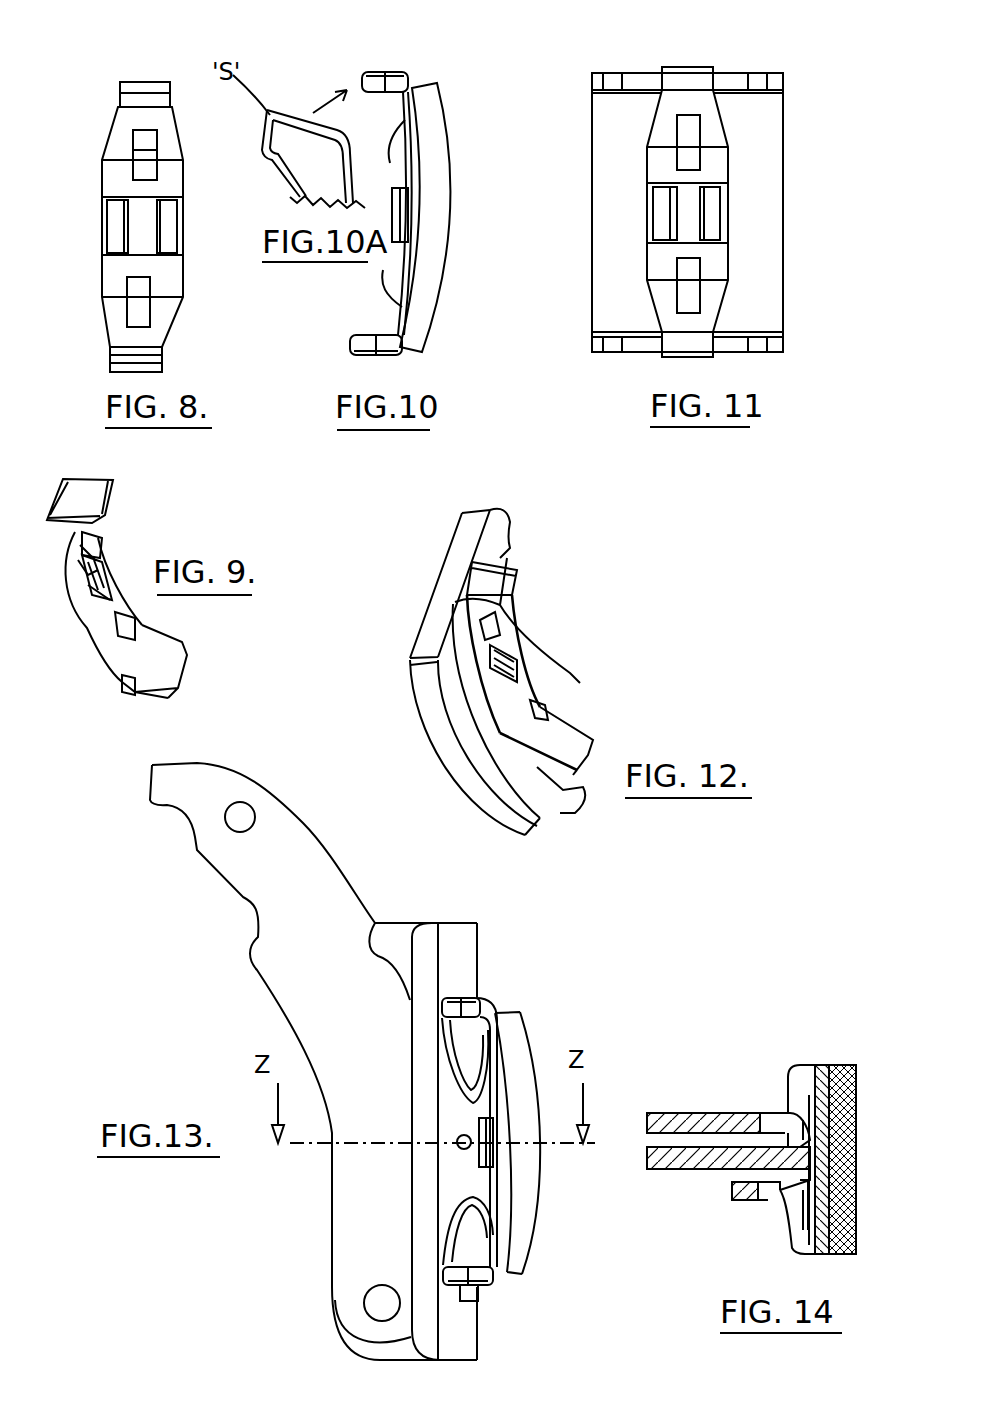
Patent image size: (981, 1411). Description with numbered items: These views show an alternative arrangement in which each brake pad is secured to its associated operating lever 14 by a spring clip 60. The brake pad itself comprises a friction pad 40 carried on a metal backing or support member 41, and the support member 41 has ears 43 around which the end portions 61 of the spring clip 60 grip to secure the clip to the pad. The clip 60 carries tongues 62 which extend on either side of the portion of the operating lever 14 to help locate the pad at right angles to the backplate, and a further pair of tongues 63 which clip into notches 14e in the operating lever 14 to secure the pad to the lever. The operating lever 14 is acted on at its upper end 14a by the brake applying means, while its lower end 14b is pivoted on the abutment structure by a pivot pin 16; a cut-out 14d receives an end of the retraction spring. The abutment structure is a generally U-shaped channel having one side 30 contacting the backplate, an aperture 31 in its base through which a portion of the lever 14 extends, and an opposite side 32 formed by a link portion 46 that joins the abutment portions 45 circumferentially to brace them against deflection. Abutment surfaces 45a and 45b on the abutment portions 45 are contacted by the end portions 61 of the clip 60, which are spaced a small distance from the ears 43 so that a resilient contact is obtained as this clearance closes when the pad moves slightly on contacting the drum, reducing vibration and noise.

In FIG. 13, the operating lever 14 is at (270, 965).
In FIG. 13, the upper end of operating lever 14a is at (167, 787).
In FIG. 13, the lower end of operating lever 14b is at (363, 1323).
In FIG. 13, the cut-out 14d is at (403, 927).
In FIG. 13, the notch 14e is at (467, 1098).
In FIG. 13, the pivot pin 16 is at (377, 1303).
In FIG. 14, the side of U-shaped channel structure 30 is at (688, 1123).
In FIG. 14, the aperture 31 is at (767, 1195).
In FIG. 14, the opposite side of U-shaped channel structure 32 is at (740, 1200).
In FIG. 10, the friction pad 40 is at (432, 253).
In FIG. 12, the friction pad 40 is at (440, 607).
In FIG. 13, the friction pad 40 is at (527, 1187).
In FIG. 14, the friction pad 40 is at (842, 1065).
In FIG. 10A, the backing/support member 41 is at (337, 178).
In FIG. 10, the backing/support member 41 is at (400, 313).
In FIG. 11, the backing/support member 41 is at (760, 297).
In FIG. 12, the backing/support member 41 is at (450, 698).
In FIG. 13, the backing/support member 41 is at (490, 1253).
In FIG. 14, the backing/support member 41 is at (822, 1065).
In FIG. 10A, the ears 43 is at (290, 143).
In FIG. 10, the ears 43 is at (363, 343).
In FIG. 12, the ears 43 is at (497, 557).
In FIG. 13, the abutment portion 45 is at (460, 953).
In FIG. 13, the abutment surface 45a is at (453, 997).
In FIG. 13, the abutment surface 45b is at (480, 1300).
In FIG. 13, the link portion 46 is at (423, 1103).
In FIG. 8, the spring clip 60 is at (142, 227).
In FIG. 11, the spring clip 60 is at (687, 211).
In FIG. 9, the spring clip 60 is at (75, 578).
In FIG. 12, the spring clip 60 is at (567, 743).
In FIG. 14, the spring clip 60 is at (803, 1142).
In FIG. 8, the end portions of spring clip 61 is at (135, 97).
In FIG. 10A, the end portions of spring clip 61 is at (290, 117).
In FIG. 10, the end portions of spring clip 61 is at (377, 72).
In FIG. 11, the end portions of spring clip 61 is at (702, 72).
In FIG. 9, the end portions of spring clip 61 is at (78, 493).
In FIG. 12, the end portions of spring clip 61 is at (488, 585).
In FIG. 8, the tongues 62 is at (155, 233).
In FIG. 10, the tongues 62 is at (400, 215).
In FIG. 11, the tongues 62 is at (703, 210).
In FIG. 9, the tongues 62 is at (110, 582).
In FIG. 12, the tongues 62 is at (507, 680).
In FIG. 13, the tongues 62 is at (493, 1137).
In FIG. 14, the tongues 62 is at (807, 1140).
In FIG. 8, the tongues 63 is at (147, 167).
In FIG. 10, the tongues 63 is at (390, 163).
In FIG. 11, the tongues 63 is at (687, 152).
In FIG. 9, the tongues 63 is at (93, 542).
In FIG. 12, the tongues 63 is at (500, 627).
In FIG. 13, the tongues 63 is at (483, 1070).